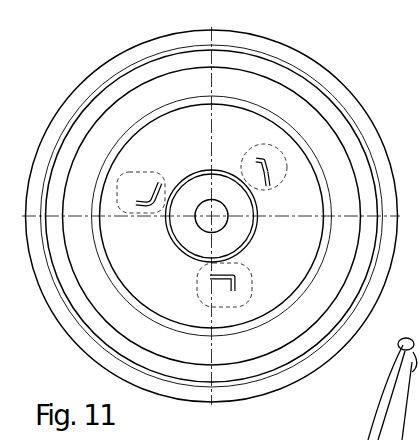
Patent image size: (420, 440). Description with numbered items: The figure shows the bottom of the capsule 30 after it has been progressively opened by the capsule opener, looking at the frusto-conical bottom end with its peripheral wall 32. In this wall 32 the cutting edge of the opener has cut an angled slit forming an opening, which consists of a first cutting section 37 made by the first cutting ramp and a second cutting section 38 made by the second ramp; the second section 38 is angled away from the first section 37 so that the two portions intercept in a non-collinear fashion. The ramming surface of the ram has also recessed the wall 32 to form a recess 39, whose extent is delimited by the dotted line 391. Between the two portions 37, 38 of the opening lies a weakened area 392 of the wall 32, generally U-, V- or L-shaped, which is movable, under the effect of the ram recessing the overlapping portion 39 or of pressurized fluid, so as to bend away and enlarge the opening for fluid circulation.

The capsule 30 is at (345, 65).
The peripheral wall 32 is at (190, 130).
The first cutting section 37 is at (267, 186).
The second cutting section 38 is at (263, 155).
The recess 39 is at (259, 159).
The dotted line 391 is at (230, 279).
The weakened area 392 is at (227, 284).